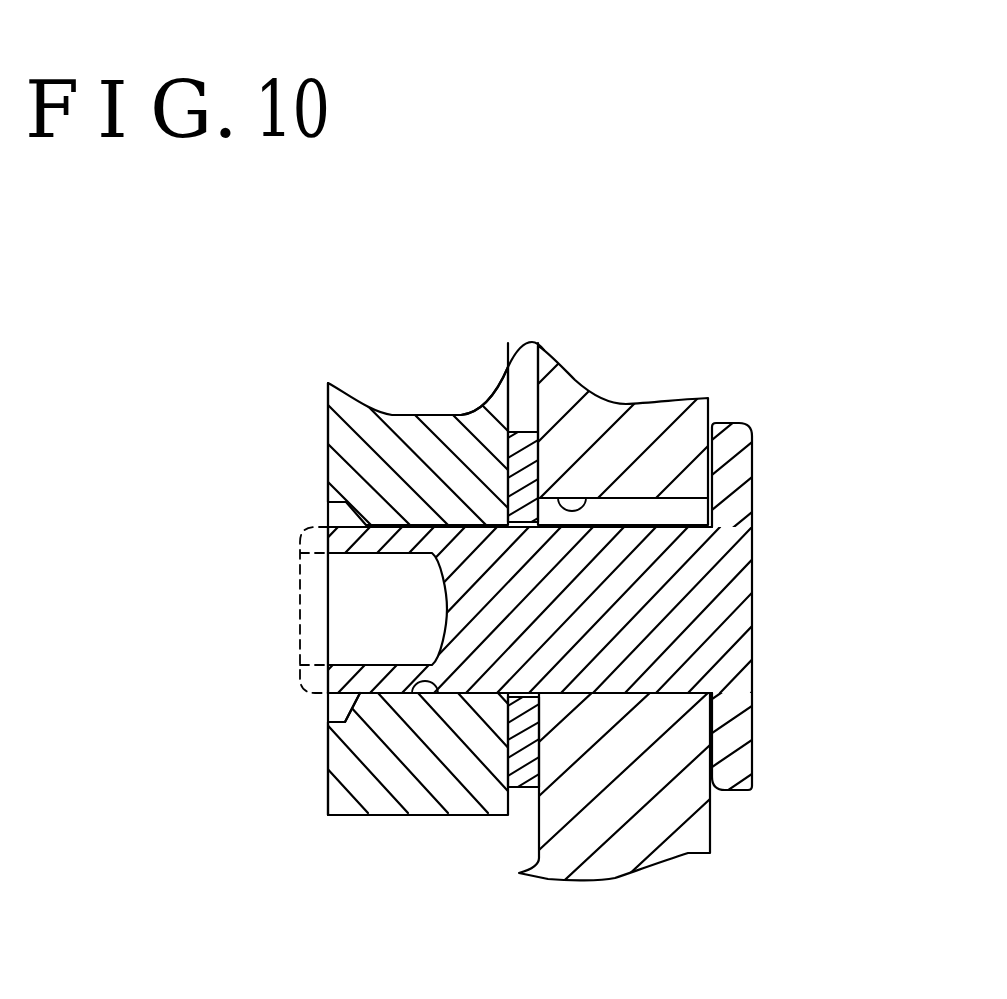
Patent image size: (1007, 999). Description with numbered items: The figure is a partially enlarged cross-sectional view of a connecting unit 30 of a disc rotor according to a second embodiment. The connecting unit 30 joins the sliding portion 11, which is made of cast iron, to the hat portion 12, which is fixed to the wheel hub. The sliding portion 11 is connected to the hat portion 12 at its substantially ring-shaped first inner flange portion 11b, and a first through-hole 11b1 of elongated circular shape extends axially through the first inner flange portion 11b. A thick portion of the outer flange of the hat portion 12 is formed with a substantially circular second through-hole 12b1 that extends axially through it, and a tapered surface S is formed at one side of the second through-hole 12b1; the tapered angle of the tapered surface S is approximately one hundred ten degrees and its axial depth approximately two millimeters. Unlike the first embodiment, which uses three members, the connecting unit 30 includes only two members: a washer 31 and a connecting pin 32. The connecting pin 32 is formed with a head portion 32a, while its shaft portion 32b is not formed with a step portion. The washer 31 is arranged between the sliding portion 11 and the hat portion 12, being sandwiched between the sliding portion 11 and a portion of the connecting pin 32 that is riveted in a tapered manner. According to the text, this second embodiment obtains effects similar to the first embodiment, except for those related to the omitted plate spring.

The connecting unit 30 is at (544, 632).
The connecting pin 32 is at (544, 571).
The head portion 32a is at (754, 783).
The shaft portion 32b is at (610, 540).
The hat portion 12 is at (413, 623).
The second through-hole 12b1 is at (417, 697).
The tapered surface S is at (328, 730).
The sliding portion 11 is at (595, 632).
The first inner flange portion 11b is at (595, 401).
The first through-hole 11b1 is at (563, 497).
The washer 31 is at (528, 789).